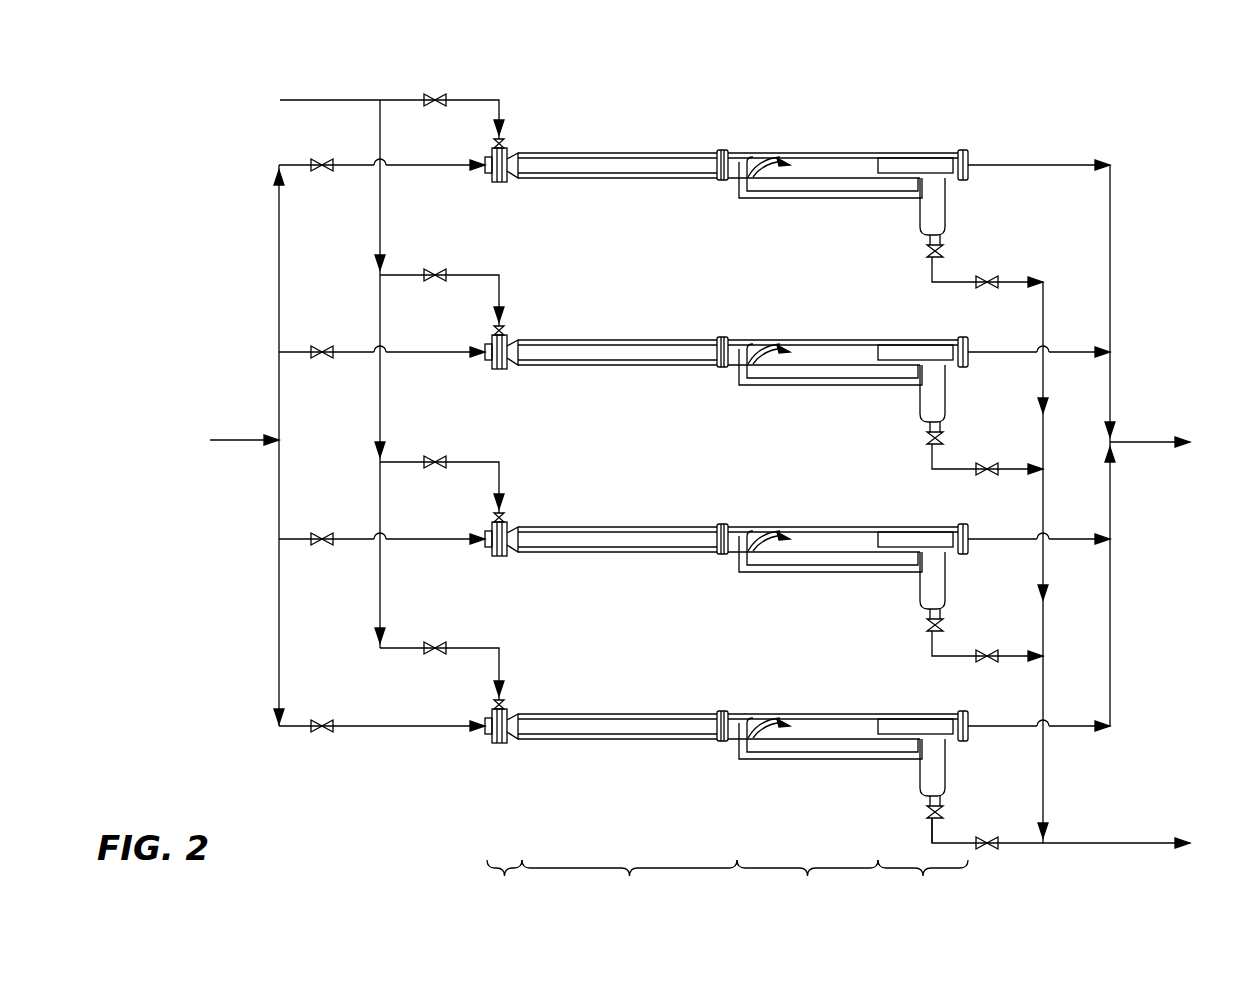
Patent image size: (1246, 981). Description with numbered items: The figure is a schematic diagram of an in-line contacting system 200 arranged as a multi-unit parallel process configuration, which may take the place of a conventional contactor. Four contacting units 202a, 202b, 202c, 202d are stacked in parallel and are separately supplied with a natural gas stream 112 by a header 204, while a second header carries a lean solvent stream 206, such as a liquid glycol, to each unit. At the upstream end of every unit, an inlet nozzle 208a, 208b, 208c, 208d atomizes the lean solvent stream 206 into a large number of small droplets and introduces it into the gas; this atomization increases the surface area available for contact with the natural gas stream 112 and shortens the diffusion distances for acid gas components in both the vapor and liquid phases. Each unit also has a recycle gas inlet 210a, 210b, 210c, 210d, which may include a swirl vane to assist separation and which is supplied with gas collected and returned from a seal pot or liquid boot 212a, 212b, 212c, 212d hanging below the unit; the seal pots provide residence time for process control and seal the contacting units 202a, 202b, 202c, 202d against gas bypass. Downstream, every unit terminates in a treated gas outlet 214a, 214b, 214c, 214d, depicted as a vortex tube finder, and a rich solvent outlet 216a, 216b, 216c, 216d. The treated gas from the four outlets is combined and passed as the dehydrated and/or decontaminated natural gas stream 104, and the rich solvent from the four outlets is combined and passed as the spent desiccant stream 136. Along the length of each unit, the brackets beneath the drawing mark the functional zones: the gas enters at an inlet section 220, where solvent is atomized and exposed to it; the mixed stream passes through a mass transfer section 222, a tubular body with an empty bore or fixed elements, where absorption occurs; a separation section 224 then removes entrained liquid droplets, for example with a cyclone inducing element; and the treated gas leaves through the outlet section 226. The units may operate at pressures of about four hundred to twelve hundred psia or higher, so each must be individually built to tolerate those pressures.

The in-line contacting system 200 is at (1208, 125).
The natural gas stream 112 is at (224, 439).
The dehydrated and/or decontaminated natural gas stream 104 is at (1177, 441).
The spent desiccant stream 136 is at (1088, 835).
The header 204 is at (278, 269).
The lean solvent stream 206 is at (371, 392).
The inlet nozzle 208a is at (492, 183).
The inlet nozzle 208b is at (492, 370).
The inlet nozzle 208c is at (492, 557).
The inlet nozzle 208d is at (487, 736).
The contacting unit 202a is at (623, 153).
The contacting unit 202b is at (623, 340).
The contacting unit 202c is at (623, 527).
The contacting unit 202d is at (623, 714).
The recycle gas inlet 210a is at (746, 153).
The recycle gas inlet 210b is at (746, 340).
The recycle gas inlet 210c is at (746, 527).
The recycle gas inlet 210d is at (746, 714).
The seal pot or liquid boot 212a is at (948, 205).
The seal pot or liquid boot 212b is at (948, 392).
The seal pot or liquid boot 212c is at (948, 579).
The seal pot or liquid boot 212d is at (948, 766).
The treated gas outlet 214a is at (964, 150).
The treated gas outlet 214b is at (964, 337).
The treated gas outlet 214c is at (964, 524).
The treated gas outlet 214d is at (964, 711).
The rich solvent outlet 216a is at (930, 277).
The rich solvent outlet 216b is at (930, 464).
The rich solvent outlet 216c is at (930, 651).
The rich solvent outlet 216d is at (930, 838).
The inlet section 220 is at (500, 880).
The mass transfer section 222 is at (629, 880).
The separation section 224 is at (807, 880).
The outlet section 226 is at (923, 880).